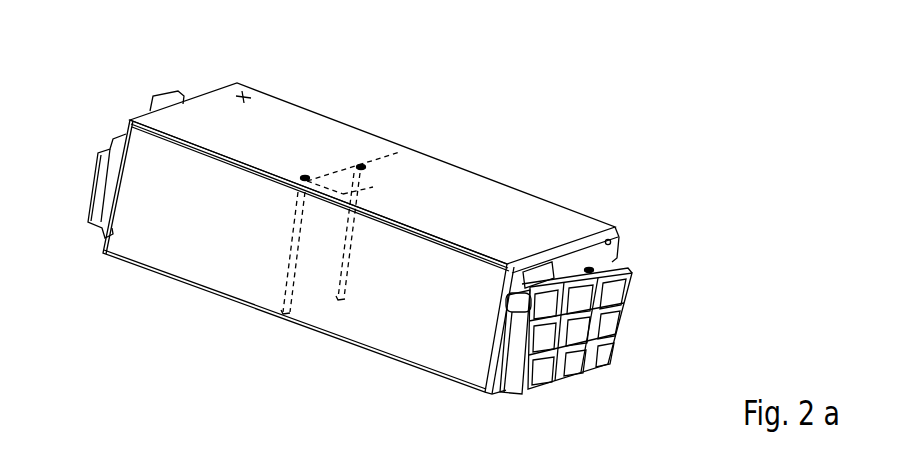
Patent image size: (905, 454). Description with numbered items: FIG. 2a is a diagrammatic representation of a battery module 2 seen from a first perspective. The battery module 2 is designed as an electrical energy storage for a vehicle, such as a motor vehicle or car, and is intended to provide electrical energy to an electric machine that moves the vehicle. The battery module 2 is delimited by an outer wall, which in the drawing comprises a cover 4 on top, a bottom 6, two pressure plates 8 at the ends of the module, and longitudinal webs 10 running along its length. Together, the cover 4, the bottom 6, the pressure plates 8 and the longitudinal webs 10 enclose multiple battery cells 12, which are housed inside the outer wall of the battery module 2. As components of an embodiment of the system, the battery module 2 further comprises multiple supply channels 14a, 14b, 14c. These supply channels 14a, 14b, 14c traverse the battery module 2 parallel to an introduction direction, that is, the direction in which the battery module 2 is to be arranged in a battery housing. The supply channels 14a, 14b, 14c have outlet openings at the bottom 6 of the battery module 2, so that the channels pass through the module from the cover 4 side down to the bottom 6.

The battery module 2 is at (393, 197).
The cover 4 is at (491, 190).
The bottom 6 is at (310, 328).
The pressure plates 8 is at (105, 187).
The longitudinal webs 10 is at (185, 258).
The battery cells 12 is at (386, 174).
The supply channel 14a is at (305, 176).
The supply channel 14b is at (361, 165).
The supply channel 14c is at (589, 268).